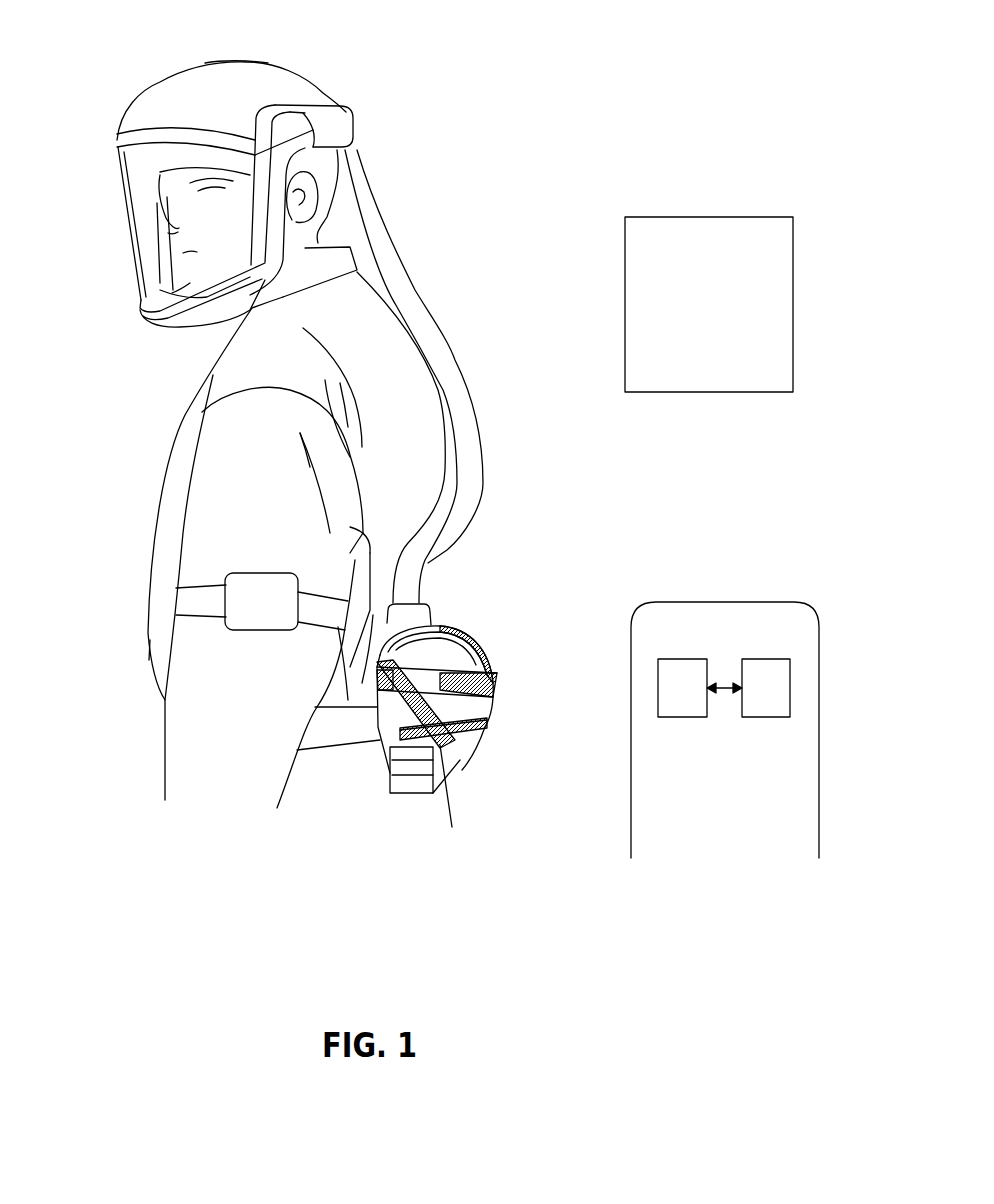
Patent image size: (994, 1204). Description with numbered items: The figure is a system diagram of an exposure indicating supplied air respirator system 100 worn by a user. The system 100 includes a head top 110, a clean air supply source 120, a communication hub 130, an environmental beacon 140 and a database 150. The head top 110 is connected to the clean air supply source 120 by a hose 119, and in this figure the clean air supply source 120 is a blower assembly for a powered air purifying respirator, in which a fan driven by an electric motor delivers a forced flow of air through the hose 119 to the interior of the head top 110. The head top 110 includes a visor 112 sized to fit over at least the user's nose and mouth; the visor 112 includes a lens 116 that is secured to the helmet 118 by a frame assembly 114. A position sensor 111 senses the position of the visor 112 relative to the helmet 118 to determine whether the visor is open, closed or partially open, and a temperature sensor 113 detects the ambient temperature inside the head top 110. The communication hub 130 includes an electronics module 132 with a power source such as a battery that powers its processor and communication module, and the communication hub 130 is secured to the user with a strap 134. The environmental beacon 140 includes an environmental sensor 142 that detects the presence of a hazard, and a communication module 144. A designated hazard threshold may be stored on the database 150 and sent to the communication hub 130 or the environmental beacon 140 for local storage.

The exposure indicating supplied air respirator system 100 is at (482, 62).
The head top 110 is at (177, 83).
The position sensor 111 is at (316, 108).
The visor 112 is at (120, 170).
The temperature sensor 113 is at (317, 130).
The frame assembly 114 is at (142, 317).
The lens 116 is at (180, 180).
The helmet 118 is at (255, 73).
The hose 119 is at (460, 386).
The clean air supply source 120 is at (493, 682).
The communication hub 130 is at (205, 633).
The electronics module 132 is at (247, 590).
The strap 134 is at (197, 600).
The environmental beacon 140 is at (625, 590).
The environmental sensor 142 is at (697, 688).
The communication module 144 is at (761, 688).
The database 150 is at (709, 304).